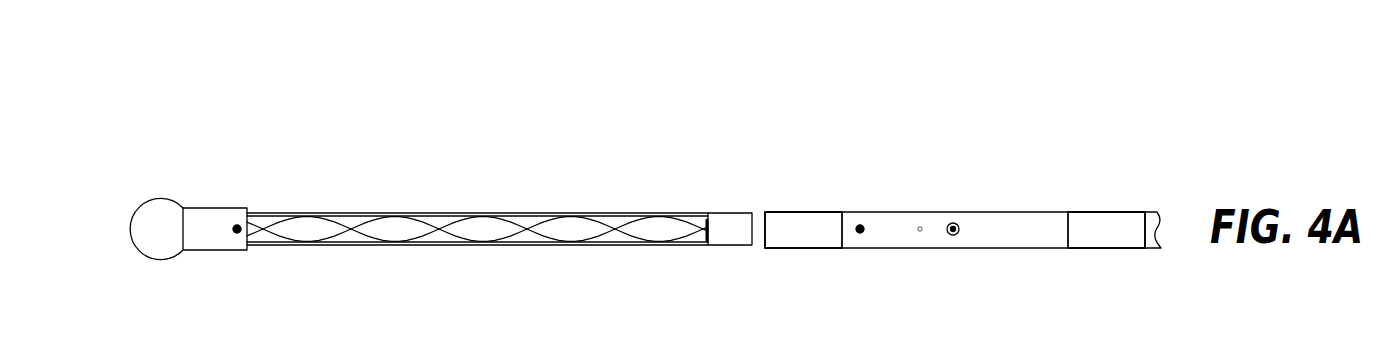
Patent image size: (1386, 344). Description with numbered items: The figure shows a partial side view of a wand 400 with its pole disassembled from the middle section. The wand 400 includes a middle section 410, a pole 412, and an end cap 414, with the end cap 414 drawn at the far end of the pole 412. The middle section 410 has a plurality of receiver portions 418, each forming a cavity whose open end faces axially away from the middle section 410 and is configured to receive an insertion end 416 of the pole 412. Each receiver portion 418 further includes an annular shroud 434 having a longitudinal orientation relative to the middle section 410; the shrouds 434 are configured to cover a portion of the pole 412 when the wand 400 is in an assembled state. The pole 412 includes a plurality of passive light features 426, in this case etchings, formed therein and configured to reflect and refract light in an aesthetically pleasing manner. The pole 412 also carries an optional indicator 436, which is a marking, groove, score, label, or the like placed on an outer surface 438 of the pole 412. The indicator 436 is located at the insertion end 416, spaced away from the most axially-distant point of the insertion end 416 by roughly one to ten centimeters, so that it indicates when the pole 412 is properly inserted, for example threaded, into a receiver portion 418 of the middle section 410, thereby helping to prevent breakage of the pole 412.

The wand 400 is at (1028, 92).
The middle section 410 is at (1013, 223).
The pole 412 is at (438, 216).
The end cap 414 is at (167, 222).
The insertion end 416 is at (735, 213).
The receiver portion 418 is at (829, 192).
The passive light feature 426 is at (452, 238).
The annular shroud 434 is at (805, 235).
The indicator 436 is at (705, 241).
The outer surface 438 is at (512, 214).